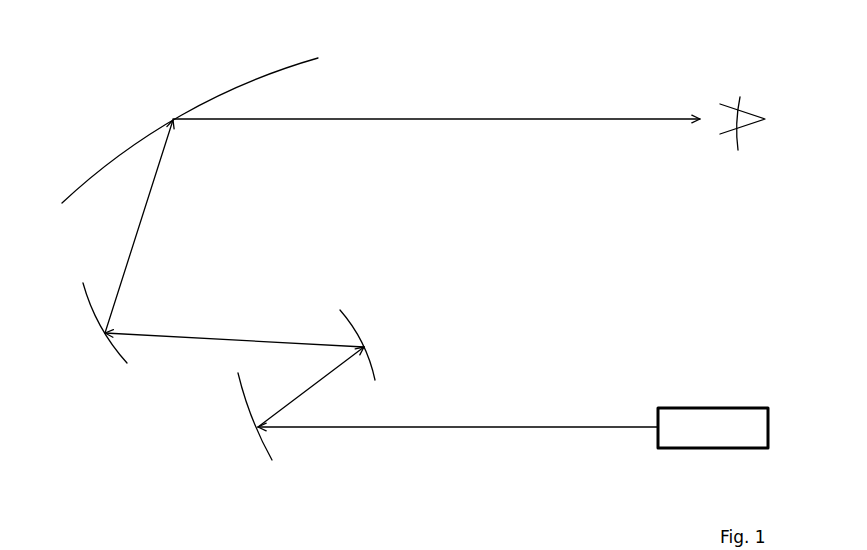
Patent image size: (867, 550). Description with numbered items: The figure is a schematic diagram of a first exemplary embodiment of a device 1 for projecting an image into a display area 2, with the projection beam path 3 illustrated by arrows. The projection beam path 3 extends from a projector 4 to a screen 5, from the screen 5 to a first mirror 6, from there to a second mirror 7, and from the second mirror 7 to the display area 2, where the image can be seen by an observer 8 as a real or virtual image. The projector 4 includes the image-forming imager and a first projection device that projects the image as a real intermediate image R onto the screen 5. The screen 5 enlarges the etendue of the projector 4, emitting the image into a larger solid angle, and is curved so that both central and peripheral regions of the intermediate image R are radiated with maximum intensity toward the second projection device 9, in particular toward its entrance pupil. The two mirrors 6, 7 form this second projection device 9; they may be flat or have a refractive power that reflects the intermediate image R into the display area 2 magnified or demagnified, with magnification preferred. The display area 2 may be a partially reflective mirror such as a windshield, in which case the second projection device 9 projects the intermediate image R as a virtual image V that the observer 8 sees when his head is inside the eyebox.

The device 1 is at (135, 115).
The display area 2 is at (187, 105).
The virtual image V is at (186, 137).
The observer 8 is at (715, 103).
The second projection device 9 is at (488, 287).
The second mirror 7 is at (92, 322).
The projection beam path 3 is at (193, 370).
The first mirror 6 is at (363, 330).
The screen 5 is at (255, 450).
The real intermediate image R is at (278, 445).
The projector 4 is at (712, 405).